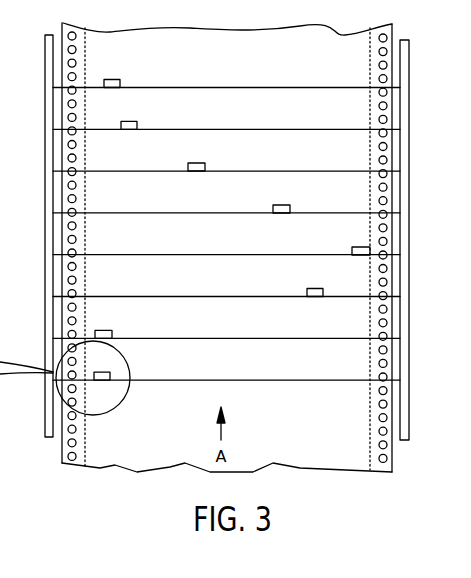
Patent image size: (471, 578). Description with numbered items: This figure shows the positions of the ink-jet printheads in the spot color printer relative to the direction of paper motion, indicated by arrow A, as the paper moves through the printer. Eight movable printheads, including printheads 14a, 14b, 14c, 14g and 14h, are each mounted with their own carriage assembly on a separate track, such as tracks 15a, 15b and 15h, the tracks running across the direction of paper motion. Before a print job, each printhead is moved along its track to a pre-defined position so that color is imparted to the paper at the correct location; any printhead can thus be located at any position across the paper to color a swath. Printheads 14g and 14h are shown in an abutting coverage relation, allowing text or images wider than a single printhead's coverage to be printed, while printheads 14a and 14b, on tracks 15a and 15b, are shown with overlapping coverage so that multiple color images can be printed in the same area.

The movable printhead 14a is at (102, 372).
The movable printhead 14b is at (100, 330).
The movable printhead 14c is at (313, 288).
The movable printhead 14g is at (128, 121).
The movable printhead 14h is at (112, 80).
The track 15a is at (220, 380).
The track 15b is at (222, 338).
The track 15h is at (252, 88).